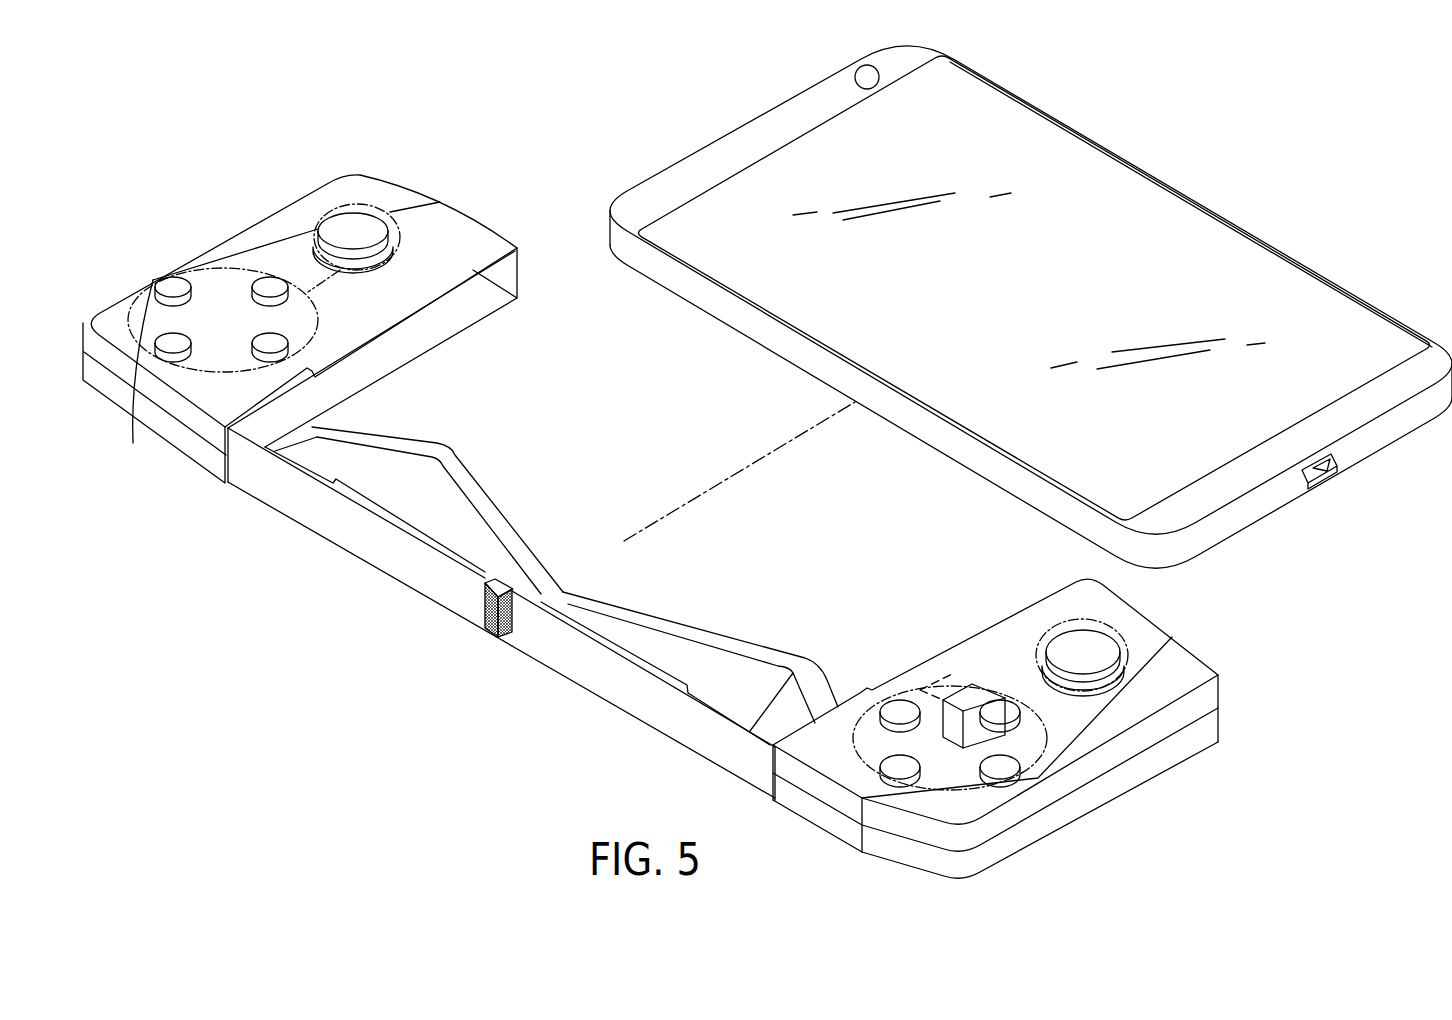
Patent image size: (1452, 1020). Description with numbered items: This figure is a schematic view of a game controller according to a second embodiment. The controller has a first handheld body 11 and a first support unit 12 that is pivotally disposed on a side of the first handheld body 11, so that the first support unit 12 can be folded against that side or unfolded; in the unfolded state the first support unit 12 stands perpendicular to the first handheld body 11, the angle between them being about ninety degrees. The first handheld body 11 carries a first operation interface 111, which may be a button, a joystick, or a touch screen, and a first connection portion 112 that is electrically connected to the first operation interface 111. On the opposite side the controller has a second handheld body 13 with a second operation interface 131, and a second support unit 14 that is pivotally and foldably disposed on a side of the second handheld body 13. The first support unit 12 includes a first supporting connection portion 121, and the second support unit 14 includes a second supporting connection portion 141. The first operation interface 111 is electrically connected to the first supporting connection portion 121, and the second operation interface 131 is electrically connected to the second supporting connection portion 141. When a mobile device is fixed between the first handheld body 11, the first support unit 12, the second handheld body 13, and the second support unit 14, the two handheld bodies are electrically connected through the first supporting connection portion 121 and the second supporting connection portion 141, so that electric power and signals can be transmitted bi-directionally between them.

The first handheld body 11 is at (1137, 767).
The first operation interface 111 is at (1027, 648).
The first connection portion 112 is at (947, 675).
The first support unit 12 is at (603, 682).
The first supporting connection portion 121 is at (505, 644).
The second handheld body 13 is at (160, 428).
The second operation interface 131 is at (302, 229).
The second support unit 14 is at (383, 552).
The second supporting connection portion 141 is at (487, 603).